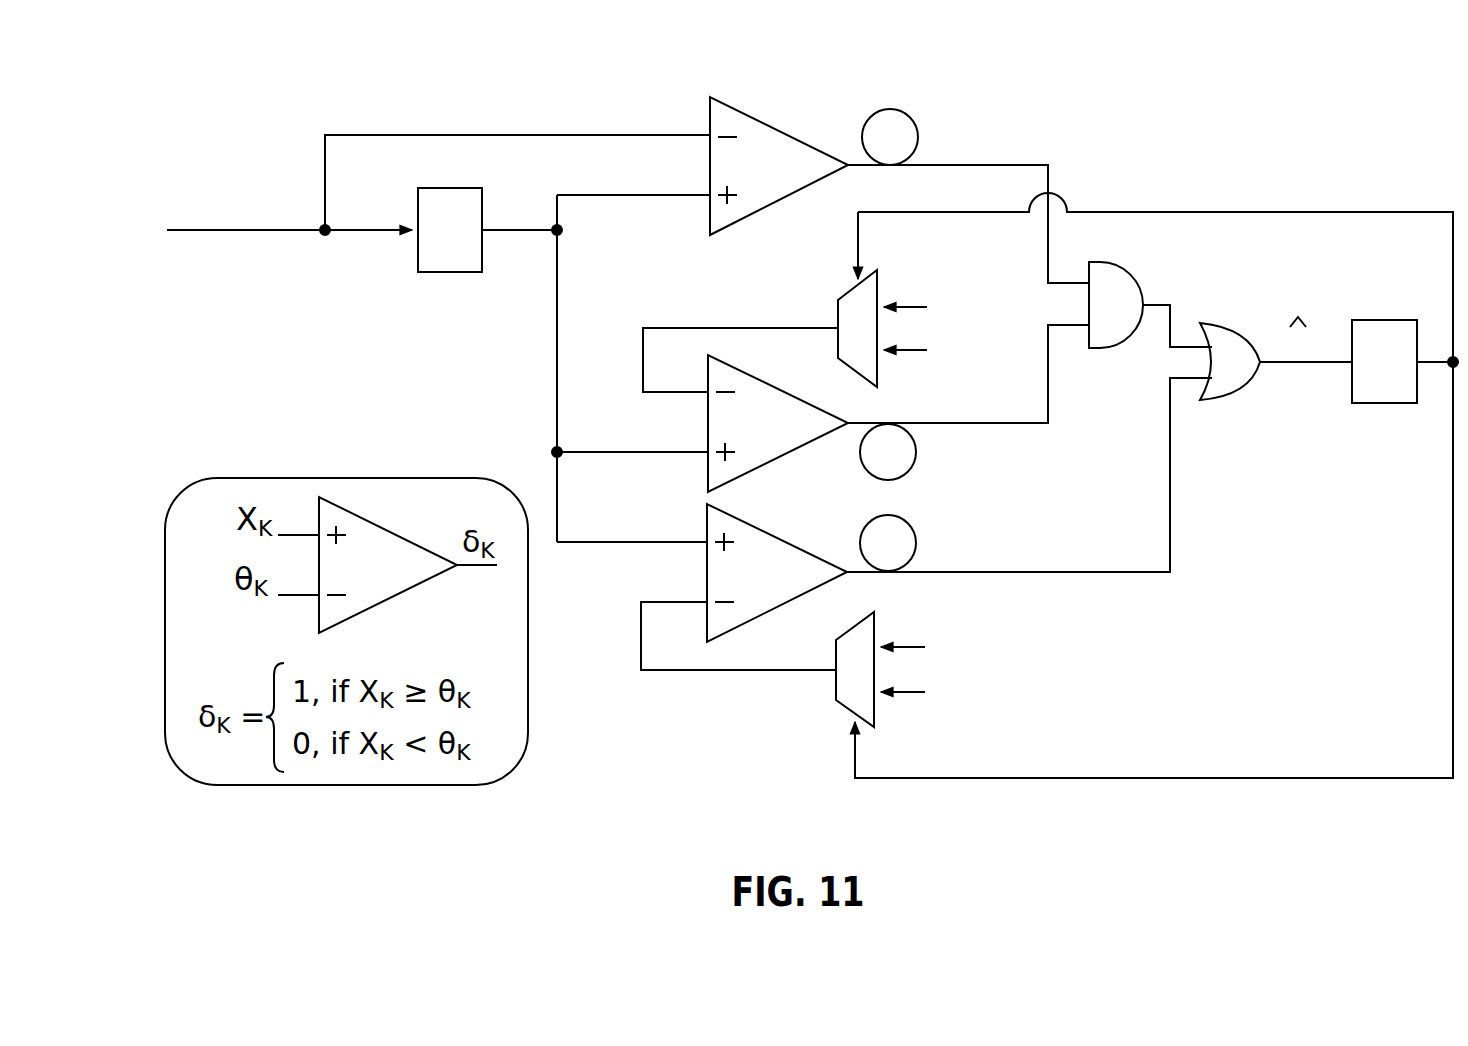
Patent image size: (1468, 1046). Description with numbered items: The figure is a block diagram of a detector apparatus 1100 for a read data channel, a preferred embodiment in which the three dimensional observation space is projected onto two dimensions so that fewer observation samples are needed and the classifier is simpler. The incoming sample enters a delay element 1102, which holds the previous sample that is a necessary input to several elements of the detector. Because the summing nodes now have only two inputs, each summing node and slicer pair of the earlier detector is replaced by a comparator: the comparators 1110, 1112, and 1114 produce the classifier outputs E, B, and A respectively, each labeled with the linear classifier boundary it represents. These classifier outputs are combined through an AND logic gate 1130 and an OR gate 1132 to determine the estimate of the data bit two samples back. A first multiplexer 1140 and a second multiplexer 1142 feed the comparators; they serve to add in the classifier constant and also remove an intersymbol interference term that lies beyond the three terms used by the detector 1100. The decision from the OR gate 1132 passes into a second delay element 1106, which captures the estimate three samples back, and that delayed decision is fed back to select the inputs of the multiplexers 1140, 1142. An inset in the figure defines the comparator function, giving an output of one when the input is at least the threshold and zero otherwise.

The detector apparatus 1100 is at (1266, 137).
The delay element 1102 is at (452, 272).
The second delay element 1106 is at (1385, 320).
The comparator 1110 is at (781, 129).
The comparator 1112 is at (779, 387).
The comparator 1114 is at (776, 535).
The AND logic gate 1130 is at (1136, 271).
The OR gate 1132 is at (1250, 388).
The first multiplexer 1140 is at (837, 294).
The second multiplexer 1142 is at (837, 704).